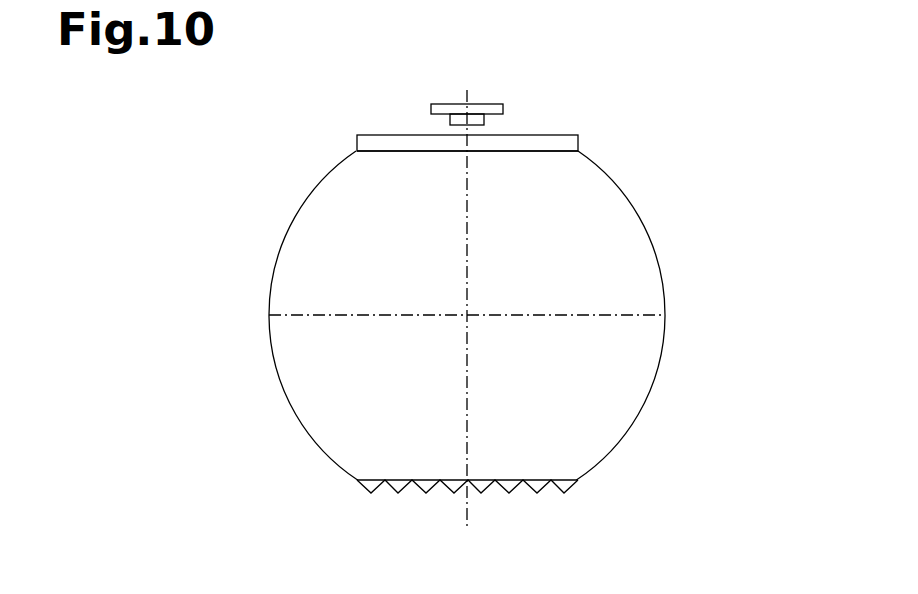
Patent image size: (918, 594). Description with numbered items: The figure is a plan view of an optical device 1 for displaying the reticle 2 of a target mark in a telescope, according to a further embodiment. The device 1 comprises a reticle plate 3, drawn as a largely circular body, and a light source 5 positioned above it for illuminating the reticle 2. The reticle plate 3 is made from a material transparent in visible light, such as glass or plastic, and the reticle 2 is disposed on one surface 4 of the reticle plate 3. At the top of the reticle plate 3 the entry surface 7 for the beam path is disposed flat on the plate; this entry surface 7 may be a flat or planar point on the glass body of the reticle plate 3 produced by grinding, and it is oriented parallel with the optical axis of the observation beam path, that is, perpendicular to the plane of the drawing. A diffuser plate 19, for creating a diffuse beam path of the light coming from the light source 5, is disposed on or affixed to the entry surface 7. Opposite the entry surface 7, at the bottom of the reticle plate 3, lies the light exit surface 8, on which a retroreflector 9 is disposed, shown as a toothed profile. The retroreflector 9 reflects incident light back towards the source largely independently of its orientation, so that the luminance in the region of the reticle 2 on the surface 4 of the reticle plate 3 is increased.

The optical device 1 is at (678, 275).
The reticle 2 is at (467, 315).
The reticle plate 3 is at (635, 350).
The surface 4 is at (437, 387).
The light source 5 is at (513, 110).
The entry surface 7 is at (502, 152).
The light exit surface 8 is at (523, 478).
The retroreflector 9 is at (540, 508).
The diffuser plate 19 is at (587, 140).